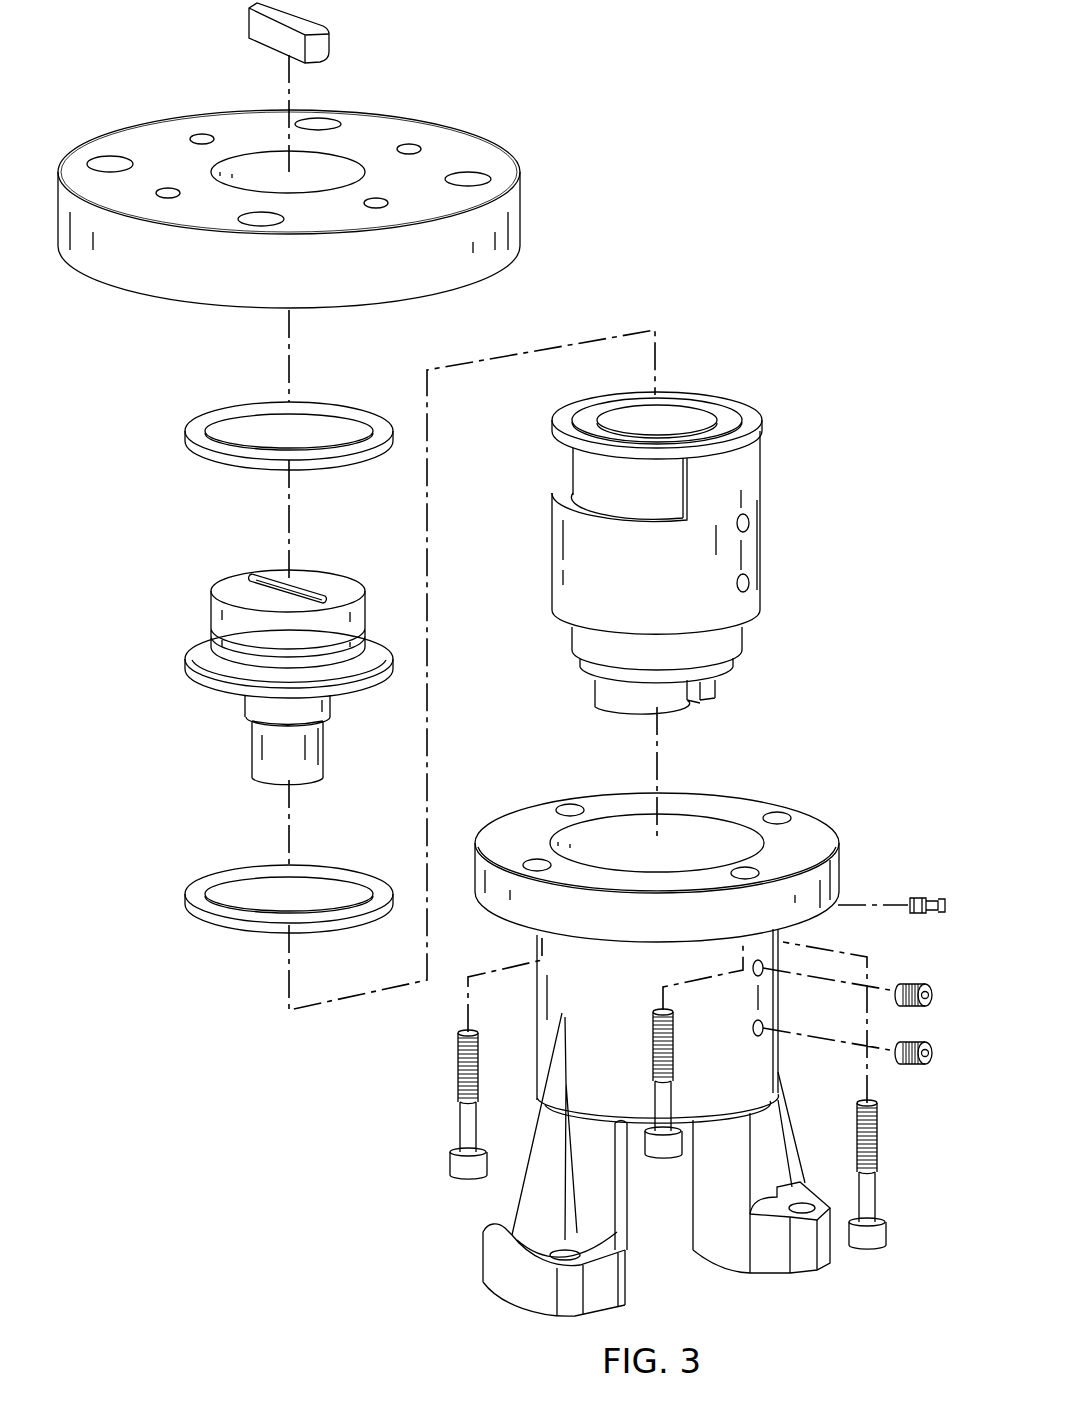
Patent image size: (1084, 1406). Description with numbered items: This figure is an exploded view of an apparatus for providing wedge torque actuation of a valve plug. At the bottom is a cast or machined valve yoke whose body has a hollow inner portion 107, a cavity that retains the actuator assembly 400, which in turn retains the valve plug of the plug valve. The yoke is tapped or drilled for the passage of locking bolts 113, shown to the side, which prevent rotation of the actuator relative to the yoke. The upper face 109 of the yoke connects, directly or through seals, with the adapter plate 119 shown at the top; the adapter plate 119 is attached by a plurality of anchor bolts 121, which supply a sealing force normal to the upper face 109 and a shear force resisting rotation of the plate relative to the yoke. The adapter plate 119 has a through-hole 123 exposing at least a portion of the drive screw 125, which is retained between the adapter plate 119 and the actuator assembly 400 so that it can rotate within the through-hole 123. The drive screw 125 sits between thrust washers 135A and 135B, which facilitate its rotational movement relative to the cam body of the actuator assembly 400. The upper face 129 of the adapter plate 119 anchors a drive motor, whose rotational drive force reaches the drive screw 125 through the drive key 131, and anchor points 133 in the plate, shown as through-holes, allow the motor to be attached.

The hollow inner portion 107 is at (700, 840).
The upper face 109 is at (533, 820).
The locking bolts 113 is at (912, 983).
The adapter plate 119 is at (520, 205).
The anchor bolts 121 is at (450, 1165).
The through-hole 123 is at (352, 172).
The drive screw 125 is at (185, 660).
The upper face 129 is at (160, 133).
The drive key 131 is at (249, 24).
The anchor points 133 is at (110, 164).
The thrust washer 135A is at (185, 437).
The thrust washer 135B is at (185, 900).
The actuator assembly 400 is at (793, 388).